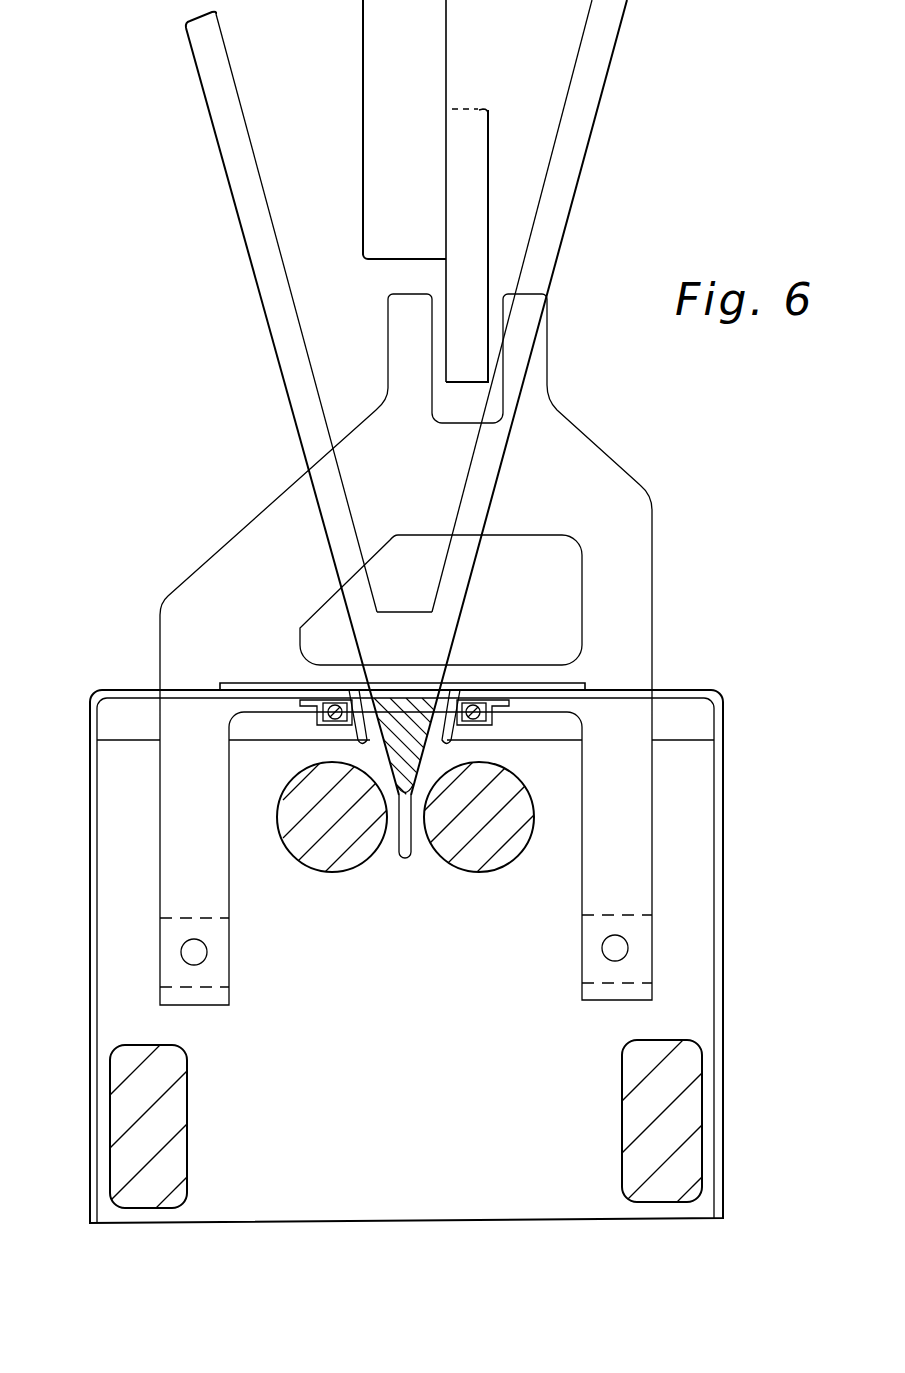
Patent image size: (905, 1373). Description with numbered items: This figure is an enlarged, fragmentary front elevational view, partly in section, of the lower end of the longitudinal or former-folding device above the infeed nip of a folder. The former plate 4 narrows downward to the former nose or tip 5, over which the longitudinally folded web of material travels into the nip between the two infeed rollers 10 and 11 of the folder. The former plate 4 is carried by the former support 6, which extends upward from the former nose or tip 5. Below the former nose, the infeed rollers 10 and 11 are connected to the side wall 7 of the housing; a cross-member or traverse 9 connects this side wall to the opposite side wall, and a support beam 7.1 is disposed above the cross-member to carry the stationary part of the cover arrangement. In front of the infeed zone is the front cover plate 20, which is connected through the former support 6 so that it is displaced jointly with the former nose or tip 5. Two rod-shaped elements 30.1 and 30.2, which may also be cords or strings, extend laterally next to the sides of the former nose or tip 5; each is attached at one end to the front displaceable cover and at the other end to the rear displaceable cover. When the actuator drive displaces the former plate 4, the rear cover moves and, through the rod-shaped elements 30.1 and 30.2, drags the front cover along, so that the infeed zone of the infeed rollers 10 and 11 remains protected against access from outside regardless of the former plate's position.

The former plate 4 is at (216, 112).
The former nose or tip 5 is at (437, 633).
The former support 6 is at (432, 197).
The side wall 7 is at (120, 1018).
The support beam 7.1 is at (270, 538).
The cross-member or traverse 9 is at (130, 1112).
The infeed roller 10 is at (335, 848).
The infeed roller 11 is at (473, 845).
The front cover plate 20 is at (688, 690).
The rod-shaped element 30.1 is at (330, 705).
The rod-shaped element 30.2 is at (473, 707).